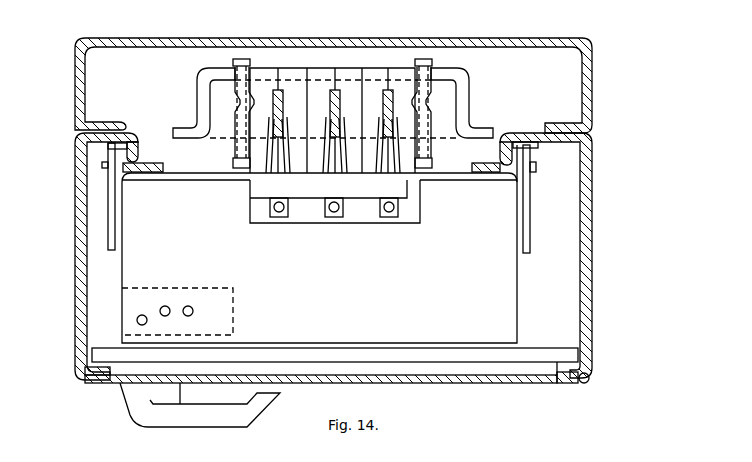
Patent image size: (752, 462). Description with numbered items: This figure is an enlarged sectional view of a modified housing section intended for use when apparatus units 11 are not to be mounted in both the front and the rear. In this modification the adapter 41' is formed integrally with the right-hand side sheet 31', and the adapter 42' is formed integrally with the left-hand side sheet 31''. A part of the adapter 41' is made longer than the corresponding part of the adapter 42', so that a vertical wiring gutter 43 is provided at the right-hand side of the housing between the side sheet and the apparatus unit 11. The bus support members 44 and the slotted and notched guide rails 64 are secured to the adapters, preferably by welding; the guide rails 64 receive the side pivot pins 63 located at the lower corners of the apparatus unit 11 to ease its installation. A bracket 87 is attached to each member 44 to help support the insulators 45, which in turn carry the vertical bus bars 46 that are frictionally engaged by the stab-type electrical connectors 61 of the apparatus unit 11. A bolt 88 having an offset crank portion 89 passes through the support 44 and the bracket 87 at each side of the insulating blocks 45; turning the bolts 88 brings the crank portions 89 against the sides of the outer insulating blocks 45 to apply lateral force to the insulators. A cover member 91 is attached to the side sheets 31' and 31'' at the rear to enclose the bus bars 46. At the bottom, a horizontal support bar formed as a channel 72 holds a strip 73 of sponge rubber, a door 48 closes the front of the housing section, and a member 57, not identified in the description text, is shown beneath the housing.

The apparatus unit 11 is at (340, 283).
The right-hand side sheet 31' is at (562, 181).
The left-hand side sheet 31'' is at (87, 256).
The adapter 41' is at (511, 132).
The adapter 42' is at (138, 130).
The vertical wiring gutter 43 is at (589, 295).
The bus support member 44 is at (160, 163).
The insulator 45 is at (283, 76).
The bus bar 46 is at (393, 95).
The door 48 is at (482, 383).
The hanger bracket 57 is at (210, 427).
The electrical connector 61 is at (340, 95).
The side pivot pin 63 is at (537, 167).
The guide rail 64 is at (112, 252).
The channel 72 is at (584, 356).
The strip of sponge rubber 73 is at (542, 378).
The bracket 87 is at (462, 70).
The bolt 88 is at (249, 58).
The crank portion 89 is at (241, 111).
The cover member 91 is at (556, 42).